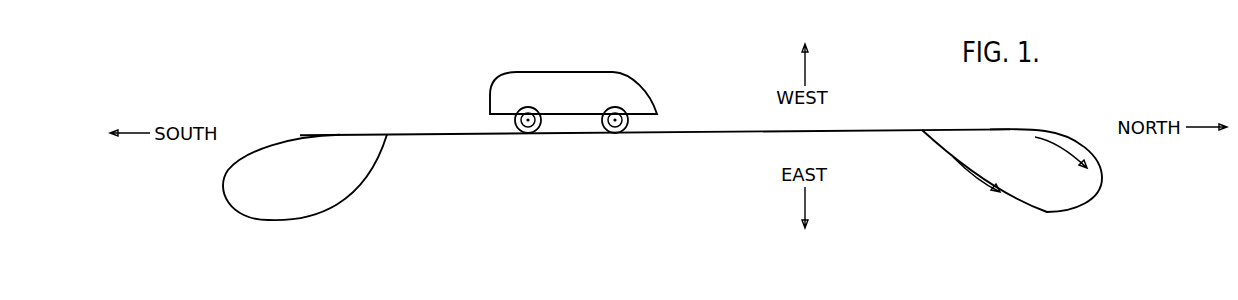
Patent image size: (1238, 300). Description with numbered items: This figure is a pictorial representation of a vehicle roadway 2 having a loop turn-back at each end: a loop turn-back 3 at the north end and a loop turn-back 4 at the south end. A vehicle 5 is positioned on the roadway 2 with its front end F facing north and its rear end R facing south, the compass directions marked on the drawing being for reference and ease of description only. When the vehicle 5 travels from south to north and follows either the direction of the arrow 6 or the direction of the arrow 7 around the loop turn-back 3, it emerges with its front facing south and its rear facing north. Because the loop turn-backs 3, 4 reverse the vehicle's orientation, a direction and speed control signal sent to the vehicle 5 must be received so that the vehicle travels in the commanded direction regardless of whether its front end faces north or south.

The vehicle roadway 2 is at (497, 164).
The loop turn-back 3 is at (1046, 188).
The loop turn-back 4 is at (291, 190).
The vehicle 5 is at (556, 72).
The arrow 6 is at (1059, 146).
The arrow 7 is at (978, 177).